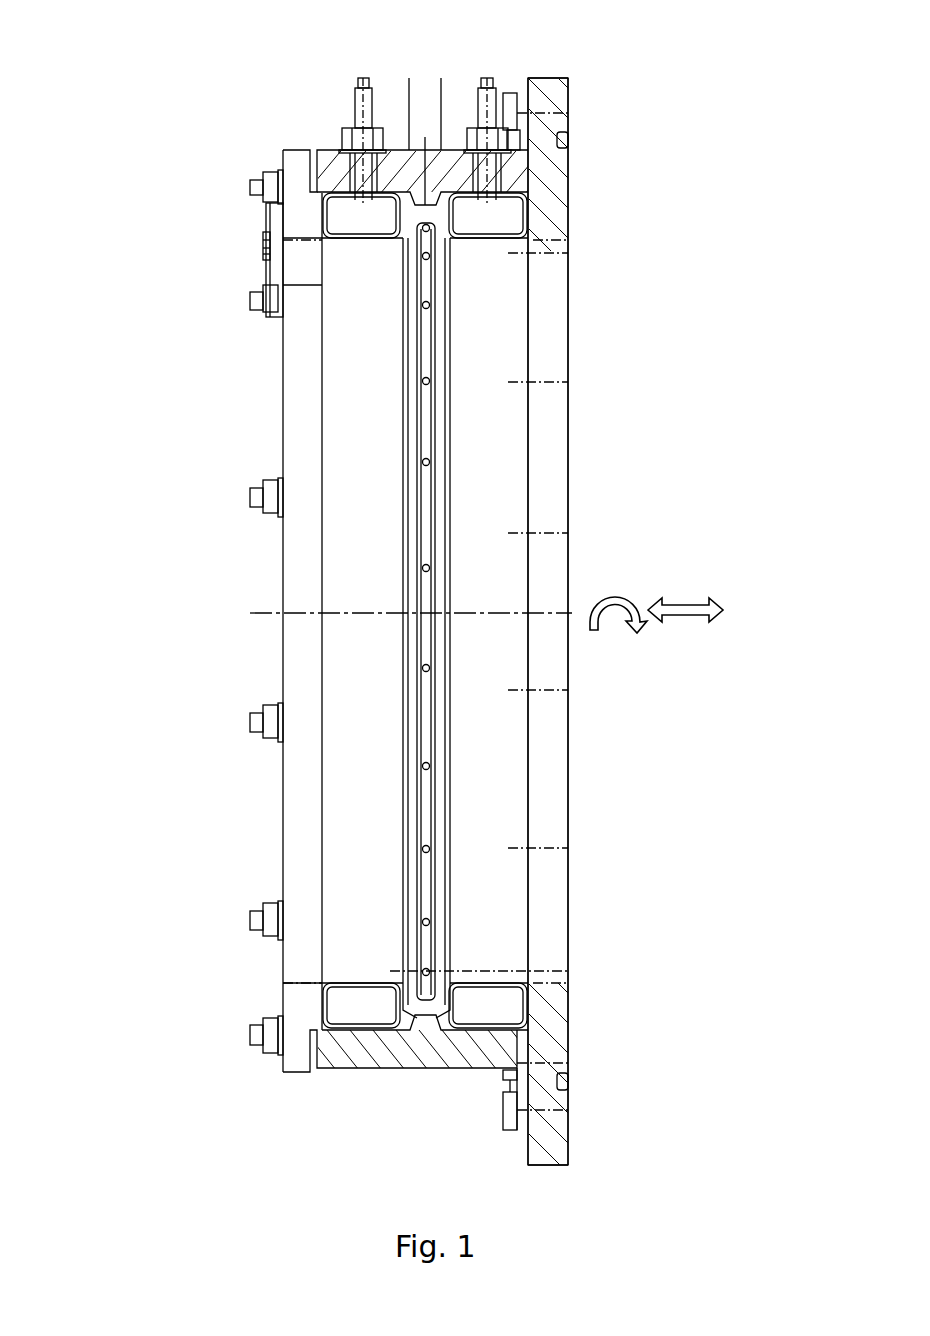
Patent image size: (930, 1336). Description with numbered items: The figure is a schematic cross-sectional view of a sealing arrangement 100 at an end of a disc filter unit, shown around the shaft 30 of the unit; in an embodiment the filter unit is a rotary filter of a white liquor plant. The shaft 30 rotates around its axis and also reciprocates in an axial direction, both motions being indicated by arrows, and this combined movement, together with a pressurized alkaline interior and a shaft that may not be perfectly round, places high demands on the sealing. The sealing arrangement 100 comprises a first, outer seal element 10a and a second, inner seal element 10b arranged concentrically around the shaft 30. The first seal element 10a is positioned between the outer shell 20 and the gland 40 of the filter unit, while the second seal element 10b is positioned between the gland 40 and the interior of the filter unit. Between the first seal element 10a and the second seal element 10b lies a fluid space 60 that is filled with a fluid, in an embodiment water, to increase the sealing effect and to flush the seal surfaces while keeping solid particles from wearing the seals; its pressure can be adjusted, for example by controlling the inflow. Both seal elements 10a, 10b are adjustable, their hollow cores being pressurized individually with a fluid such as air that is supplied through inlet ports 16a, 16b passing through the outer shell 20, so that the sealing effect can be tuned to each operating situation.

The sealing arrangement 100 is at (75, 32).
The first seal element 10a is at (360, 223).
The second seal element 10b is at (497, 223).
The inlet port 16a is at (350, 113).
The inlet port 16b is at (480, 112).
The outer shell 20 is at (307, 413).
The shaft 30 is at (505, 602).
The gland 40 is at (425, 450).
The fluid space 60 is at (423, 1010).